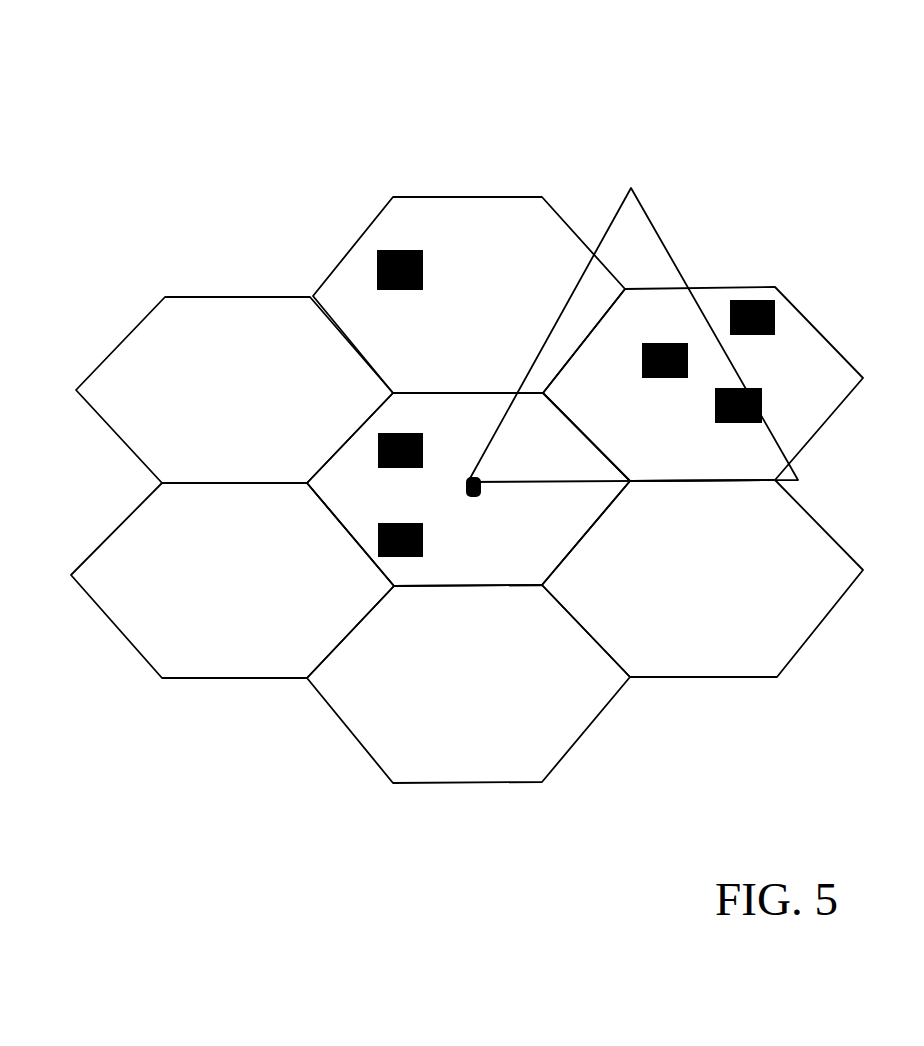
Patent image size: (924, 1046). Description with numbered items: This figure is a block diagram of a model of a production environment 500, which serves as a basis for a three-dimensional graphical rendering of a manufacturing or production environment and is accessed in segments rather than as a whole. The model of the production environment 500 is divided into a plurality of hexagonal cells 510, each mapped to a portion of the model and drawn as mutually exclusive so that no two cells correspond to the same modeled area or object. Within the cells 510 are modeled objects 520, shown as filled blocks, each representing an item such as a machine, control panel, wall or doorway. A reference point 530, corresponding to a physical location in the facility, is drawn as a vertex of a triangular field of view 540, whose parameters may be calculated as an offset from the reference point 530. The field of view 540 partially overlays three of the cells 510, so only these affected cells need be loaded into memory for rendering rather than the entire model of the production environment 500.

The model of the production environment 500 is at (676, 51).
The cells 510 is at (452, 197).
The modeled objects 520 is at (400, 249).
The reference point 530 is at (480, 498).
The field of view 540 is at (658, 237).